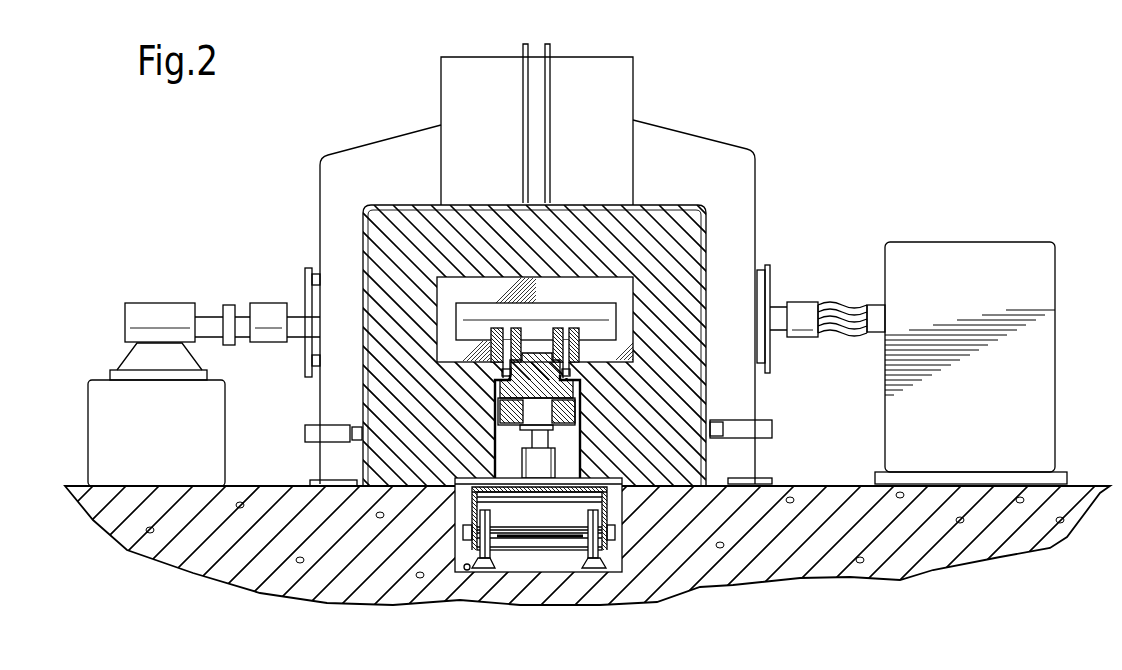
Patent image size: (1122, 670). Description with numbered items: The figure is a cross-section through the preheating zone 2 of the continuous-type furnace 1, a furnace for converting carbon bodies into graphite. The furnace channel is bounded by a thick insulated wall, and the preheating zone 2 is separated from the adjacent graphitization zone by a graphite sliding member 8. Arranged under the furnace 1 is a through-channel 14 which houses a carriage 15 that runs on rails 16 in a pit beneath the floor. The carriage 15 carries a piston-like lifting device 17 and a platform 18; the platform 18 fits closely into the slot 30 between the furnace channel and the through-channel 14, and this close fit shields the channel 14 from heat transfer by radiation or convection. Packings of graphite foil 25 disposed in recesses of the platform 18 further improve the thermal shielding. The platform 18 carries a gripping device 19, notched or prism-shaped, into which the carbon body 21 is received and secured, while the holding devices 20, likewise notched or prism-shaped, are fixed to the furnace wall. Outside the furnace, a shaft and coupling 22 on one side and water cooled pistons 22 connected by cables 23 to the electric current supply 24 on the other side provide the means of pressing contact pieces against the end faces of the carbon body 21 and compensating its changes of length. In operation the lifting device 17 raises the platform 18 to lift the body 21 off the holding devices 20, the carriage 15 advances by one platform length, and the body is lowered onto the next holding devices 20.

The continuous-type furnace 1 is at (449, 314).
The preheating zone 2 is at (617, 296).
The graphite sliding member 8 is at (560, 284).
The through-channel 14 is at (565, 455).
The carriage 15 is at (607, 549).
The rail 16 is at (467, 570).
The piston-like lifting device 17 is at (527, 472).
The platform 18 is at (573, 392).
The gripping device 19 is at (562, 330).
The holding device 20 is at (577, 351).
The carbon body 21 is at (777, 310).
The water cooled piston 22 is at (298, 332).
The cable 23 is at (837, 302).
The electric current supply 24 is at (980, 299).
The packing of graphite foil 25 is at (508, 377).
The slot 30 is at (500, 366).